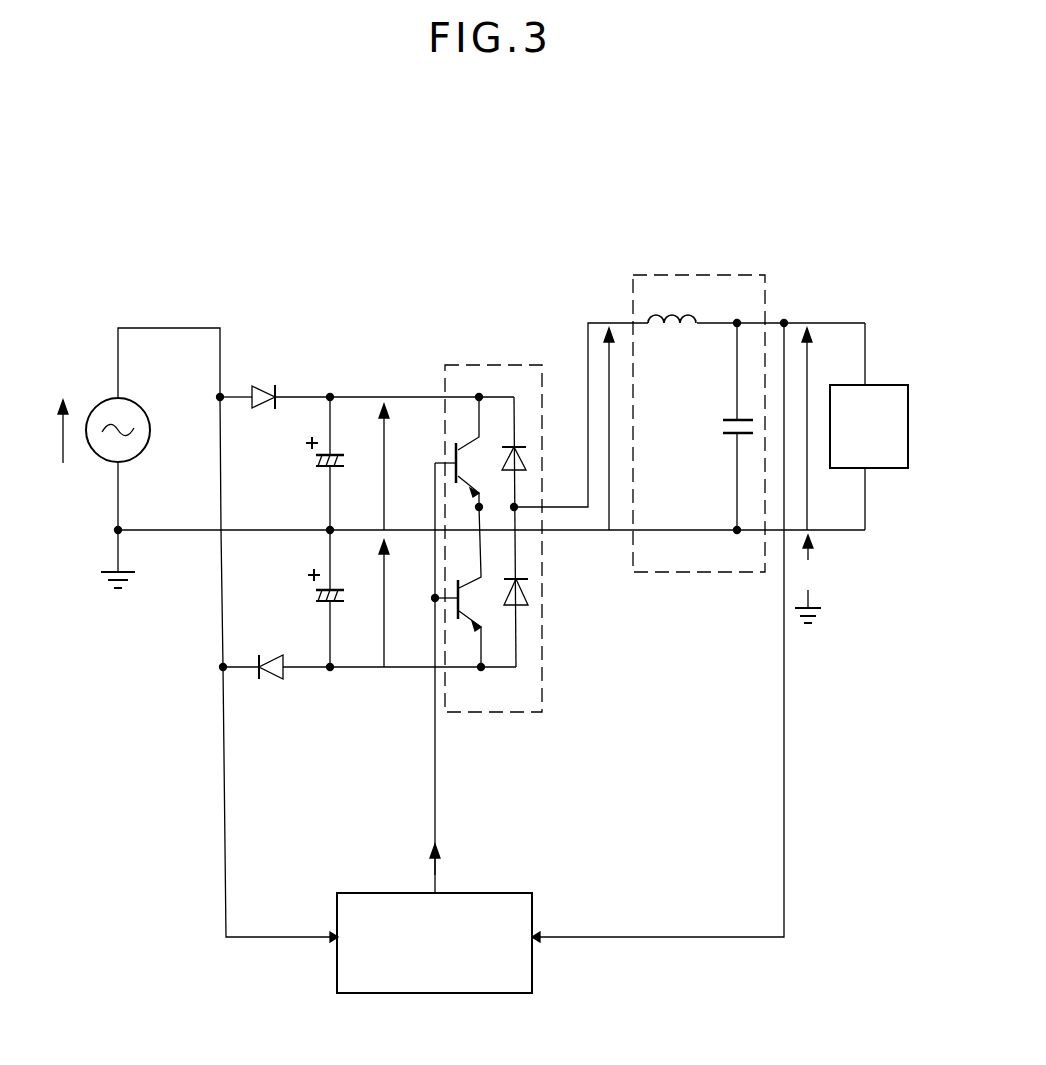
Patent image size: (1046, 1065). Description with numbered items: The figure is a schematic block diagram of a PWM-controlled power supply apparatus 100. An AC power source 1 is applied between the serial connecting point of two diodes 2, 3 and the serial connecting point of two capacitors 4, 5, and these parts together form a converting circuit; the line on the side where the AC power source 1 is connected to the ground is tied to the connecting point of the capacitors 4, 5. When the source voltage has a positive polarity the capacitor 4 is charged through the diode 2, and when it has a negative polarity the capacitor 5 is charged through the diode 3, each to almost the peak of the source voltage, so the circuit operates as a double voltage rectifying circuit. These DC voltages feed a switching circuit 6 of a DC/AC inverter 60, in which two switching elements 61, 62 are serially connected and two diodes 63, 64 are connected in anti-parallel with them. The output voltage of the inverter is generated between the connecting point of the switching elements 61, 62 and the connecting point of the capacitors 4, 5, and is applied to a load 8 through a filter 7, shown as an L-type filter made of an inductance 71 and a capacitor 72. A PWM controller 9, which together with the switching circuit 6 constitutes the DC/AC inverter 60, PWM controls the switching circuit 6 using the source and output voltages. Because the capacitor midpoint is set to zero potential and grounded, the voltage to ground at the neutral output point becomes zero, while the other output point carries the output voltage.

The PWM-controlled power supply apparatus 100 is at (578, 220).
The AC power source 1 is at (143, 417).
The diode 2 is at (263, 386).
The diode 3 is at (268, 685).
The capacitor 4 is at (312, 464).
The capacitor 5 is at (306, 588).
The switching circuit 6 is at (480, 365).
The DC/AC inverter 60 is at (762, 767).
The switching element 61 is at (453, 455).
The switching element 62 is at (455, 586).
The diode 63 is at (530, 459).
The diode 64 is at (536, 600).
The filter 7 is at (689, 275).
The inductance 71 is at (668, 334).
The capacitor 72 is at (720, 440).
The load 8 is at (880, 386).
The PWM controller 9 is at (483, 893).